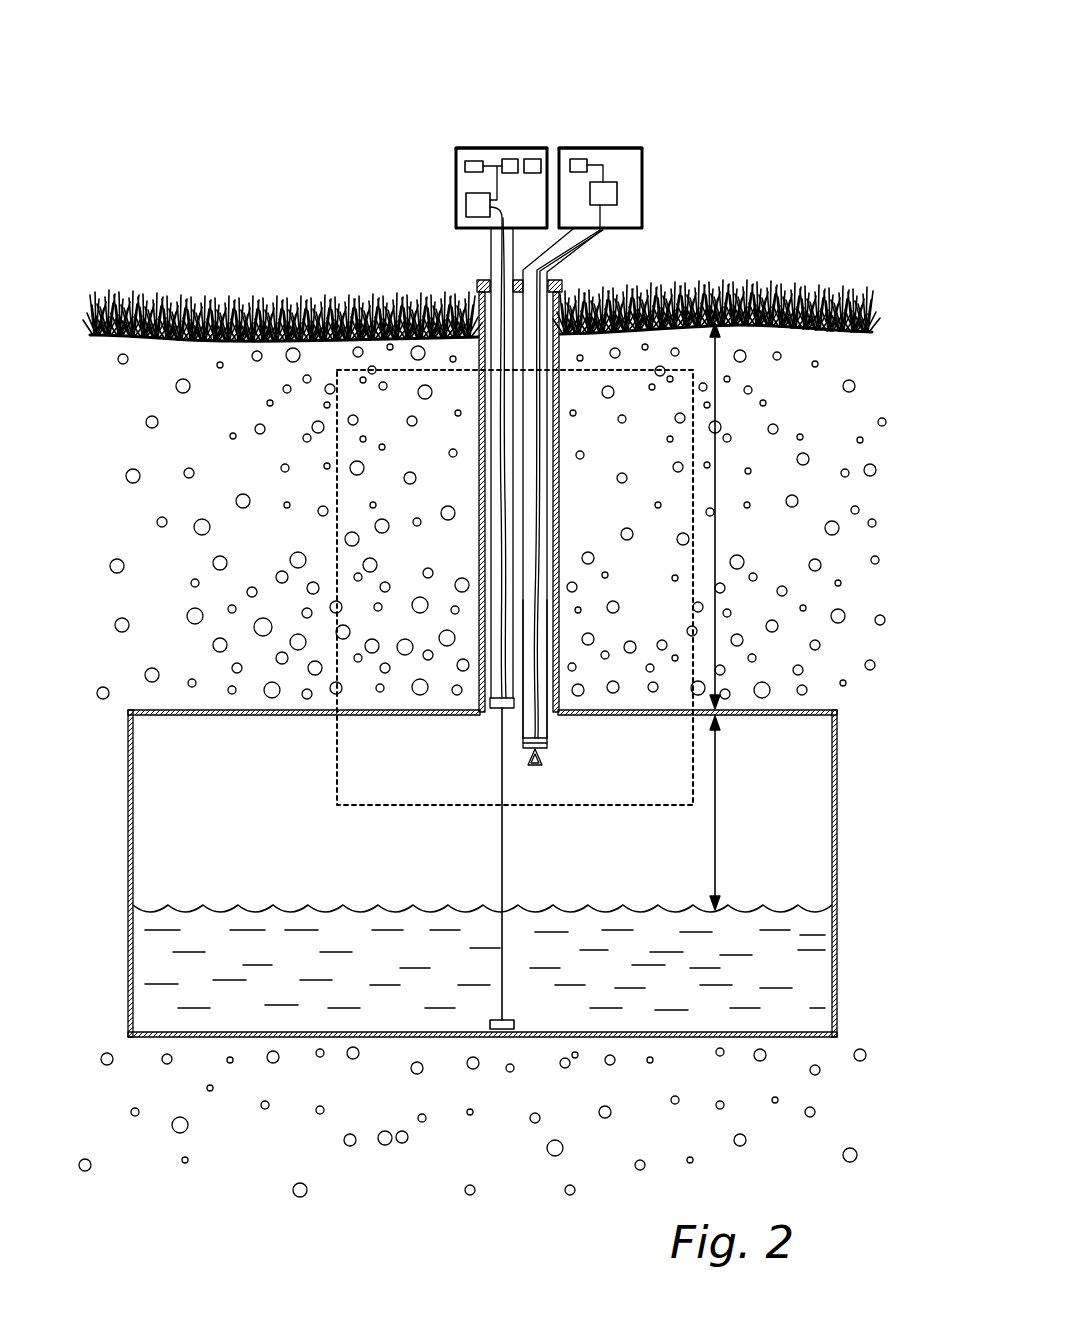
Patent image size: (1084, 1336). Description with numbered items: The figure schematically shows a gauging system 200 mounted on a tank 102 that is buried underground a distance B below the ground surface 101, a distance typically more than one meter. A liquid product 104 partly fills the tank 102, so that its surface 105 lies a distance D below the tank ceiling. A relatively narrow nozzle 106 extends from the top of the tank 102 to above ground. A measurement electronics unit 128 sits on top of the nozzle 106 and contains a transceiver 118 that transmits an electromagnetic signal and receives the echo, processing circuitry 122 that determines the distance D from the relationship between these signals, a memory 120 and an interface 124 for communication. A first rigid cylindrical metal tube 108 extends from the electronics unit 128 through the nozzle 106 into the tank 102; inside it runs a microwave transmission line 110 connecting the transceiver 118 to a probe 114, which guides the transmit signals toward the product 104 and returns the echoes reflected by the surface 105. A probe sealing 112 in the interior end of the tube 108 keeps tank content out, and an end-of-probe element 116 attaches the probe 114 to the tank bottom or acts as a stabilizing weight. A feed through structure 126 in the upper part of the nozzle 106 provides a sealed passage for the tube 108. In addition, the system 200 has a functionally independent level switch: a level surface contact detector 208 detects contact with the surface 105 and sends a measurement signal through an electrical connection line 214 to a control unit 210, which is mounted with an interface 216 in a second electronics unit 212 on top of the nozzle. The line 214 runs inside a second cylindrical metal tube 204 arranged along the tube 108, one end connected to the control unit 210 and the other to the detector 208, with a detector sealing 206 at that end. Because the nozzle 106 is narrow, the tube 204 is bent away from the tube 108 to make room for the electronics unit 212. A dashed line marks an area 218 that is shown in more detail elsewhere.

The system 200 is at (622, 93).
The ground surface 101 is at (695, 287).
The tank 102 is at (608, 710).
The liquid product 104 is at (430, 1005).
The surface 105 is at (330, 910).
The nozzle 106 is at (555, 425).
The tube 108 is at (491, 425).
The microwave transmission line 110 is at (505, 548).
The probe sealing 112 is at (492, 712).
The probe 114 is at (503, 847).
The end-of-probe element 116 is at (513, 1022).
The transceiver 118 is at (456, 202).
The memory 120 is at (456, 167).
The processing circuitry 122 is at (513, 159).
The interface 124 is at (538, 159).
The feed through structure 126 is at (478, 285).
The measurement electronics unit 128 is at (465, 148).
The tube 204 is at (548, 572).
The detector sealing 206 is at (548, 742).
The level surface contact detector 208 is at (540, 765).
The control unit 210 is at (617, 190).
The electronics unit 212 is at (642, 200).
The electrical connection line 214 is at (538, 500).
The interface 216 is at (583, 160).
The area 218 is at (334, 757).
The distance B is at (725, 516).
The distance D is at (724, 813).